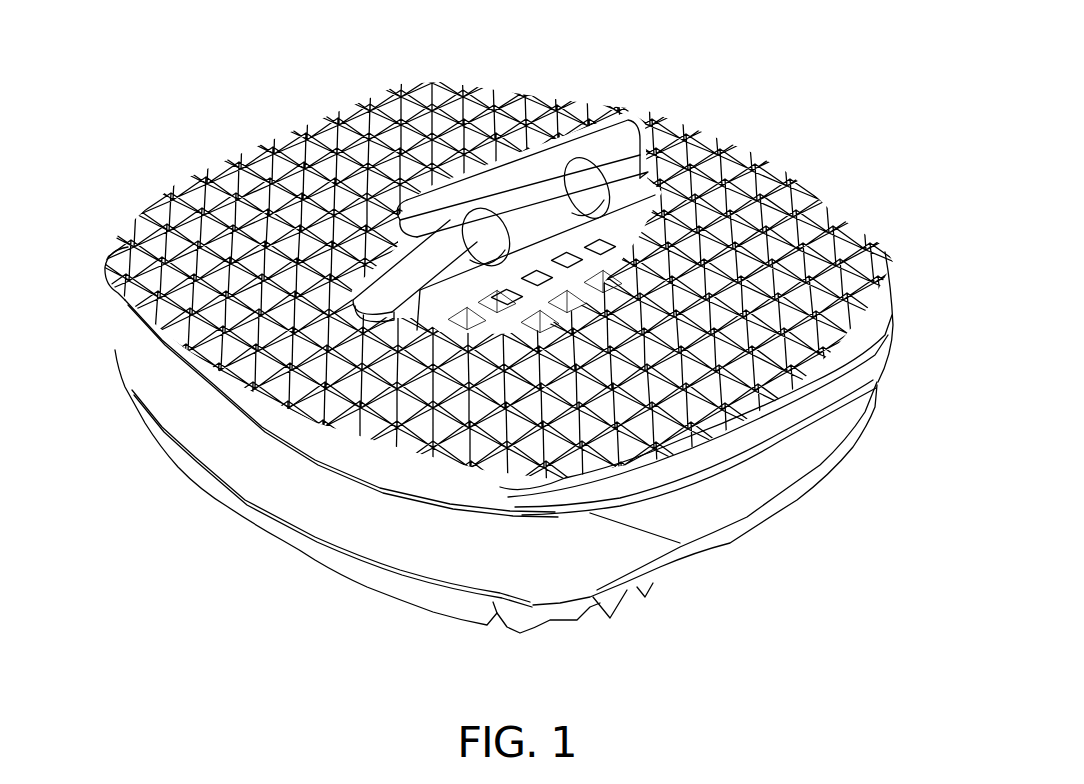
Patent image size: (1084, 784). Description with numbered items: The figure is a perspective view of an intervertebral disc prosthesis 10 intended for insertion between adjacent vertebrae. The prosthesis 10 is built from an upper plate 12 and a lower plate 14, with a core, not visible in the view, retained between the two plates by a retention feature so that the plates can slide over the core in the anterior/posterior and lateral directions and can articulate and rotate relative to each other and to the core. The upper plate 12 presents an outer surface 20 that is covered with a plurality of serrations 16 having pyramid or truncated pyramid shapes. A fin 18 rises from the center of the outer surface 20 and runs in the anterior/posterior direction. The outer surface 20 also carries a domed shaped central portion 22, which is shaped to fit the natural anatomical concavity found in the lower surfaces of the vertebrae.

The intervertebral disc prosthesis 10 is at (500, 324).
The upper plate 12 is at (495, 266).
The lower plate 14 is at (303, 512).
The serrations 16 is at (410, 97).
The fin 18 is at (597, 135).
The outer surface 20 is at (501, 262).
The domed shaped central portion 22 is at (556, 262).